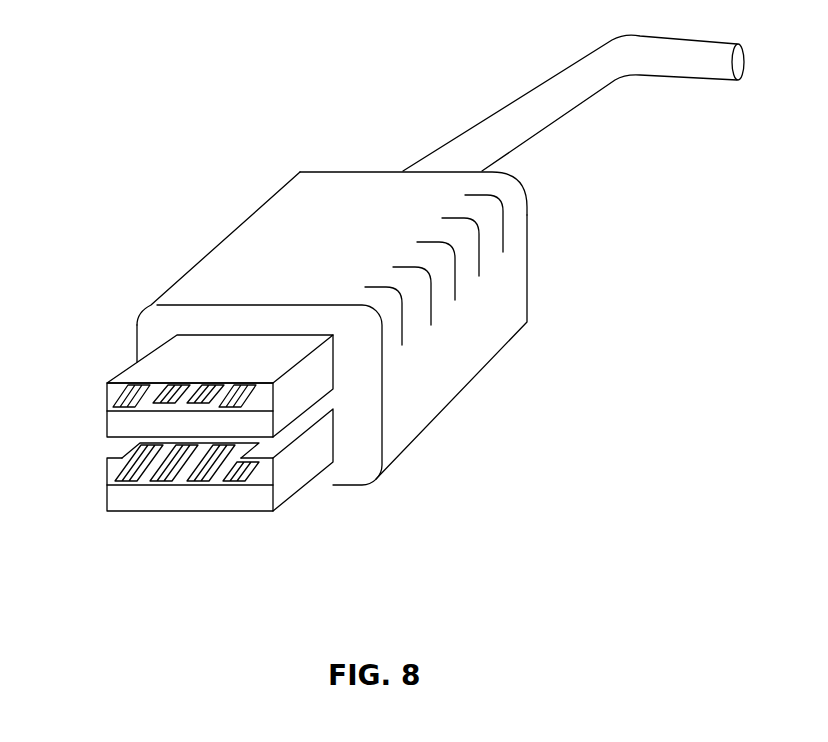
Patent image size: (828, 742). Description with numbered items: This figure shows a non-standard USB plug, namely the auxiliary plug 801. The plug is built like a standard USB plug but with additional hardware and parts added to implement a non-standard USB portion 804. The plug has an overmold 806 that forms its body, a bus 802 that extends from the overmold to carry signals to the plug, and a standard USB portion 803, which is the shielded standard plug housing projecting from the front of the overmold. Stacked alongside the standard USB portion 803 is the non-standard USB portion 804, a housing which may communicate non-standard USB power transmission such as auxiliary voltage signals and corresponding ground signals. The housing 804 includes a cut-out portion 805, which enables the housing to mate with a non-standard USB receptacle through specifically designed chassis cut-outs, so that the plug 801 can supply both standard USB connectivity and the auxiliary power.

The auxiliary plug 801 is at (440, 422).
The bus 802 is at (497, 110).
The standard USB portion 803 is at (107, 392).
The non-standard USB portion 804 is at (185, 512).
The cut-out portion 805 is at (257, 443).
The overmold 806 is at (218, 243).